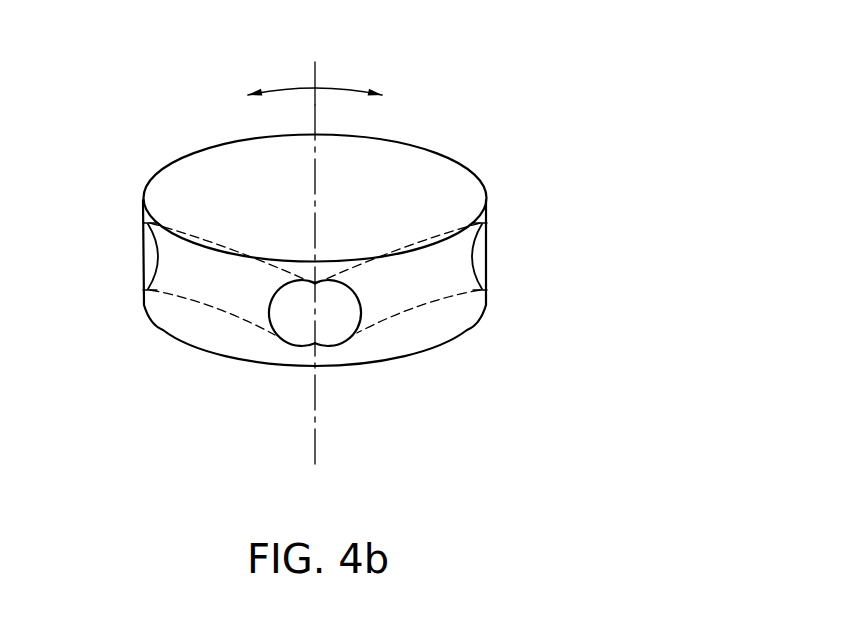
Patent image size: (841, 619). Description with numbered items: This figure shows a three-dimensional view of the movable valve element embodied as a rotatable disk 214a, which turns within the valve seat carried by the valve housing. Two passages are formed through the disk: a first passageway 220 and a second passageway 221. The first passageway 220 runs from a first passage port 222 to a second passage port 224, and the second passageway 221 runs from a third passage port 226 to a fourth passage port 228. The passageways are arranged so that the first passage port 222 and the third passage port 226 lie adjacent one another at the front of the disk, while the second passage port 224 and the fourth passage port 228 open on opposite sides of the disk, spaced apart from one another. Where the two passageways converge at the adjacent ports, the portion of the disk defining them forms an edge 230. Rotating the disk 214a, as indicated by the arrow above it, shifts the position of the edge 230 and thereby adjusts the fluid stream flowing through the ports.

The rotatable disk 214a is at (473, 50).
The first passageway 220 is at (240, 287).
The second passageway 221 is at (390, 280).
The first passage port 222 is at (290, 320).
The second passage port 224 is at (152, 253).
The third passage port 226 is at (343, 327).
The fourth passage port 228 is at (475, 253).
The edge 230 is at (312, 318).